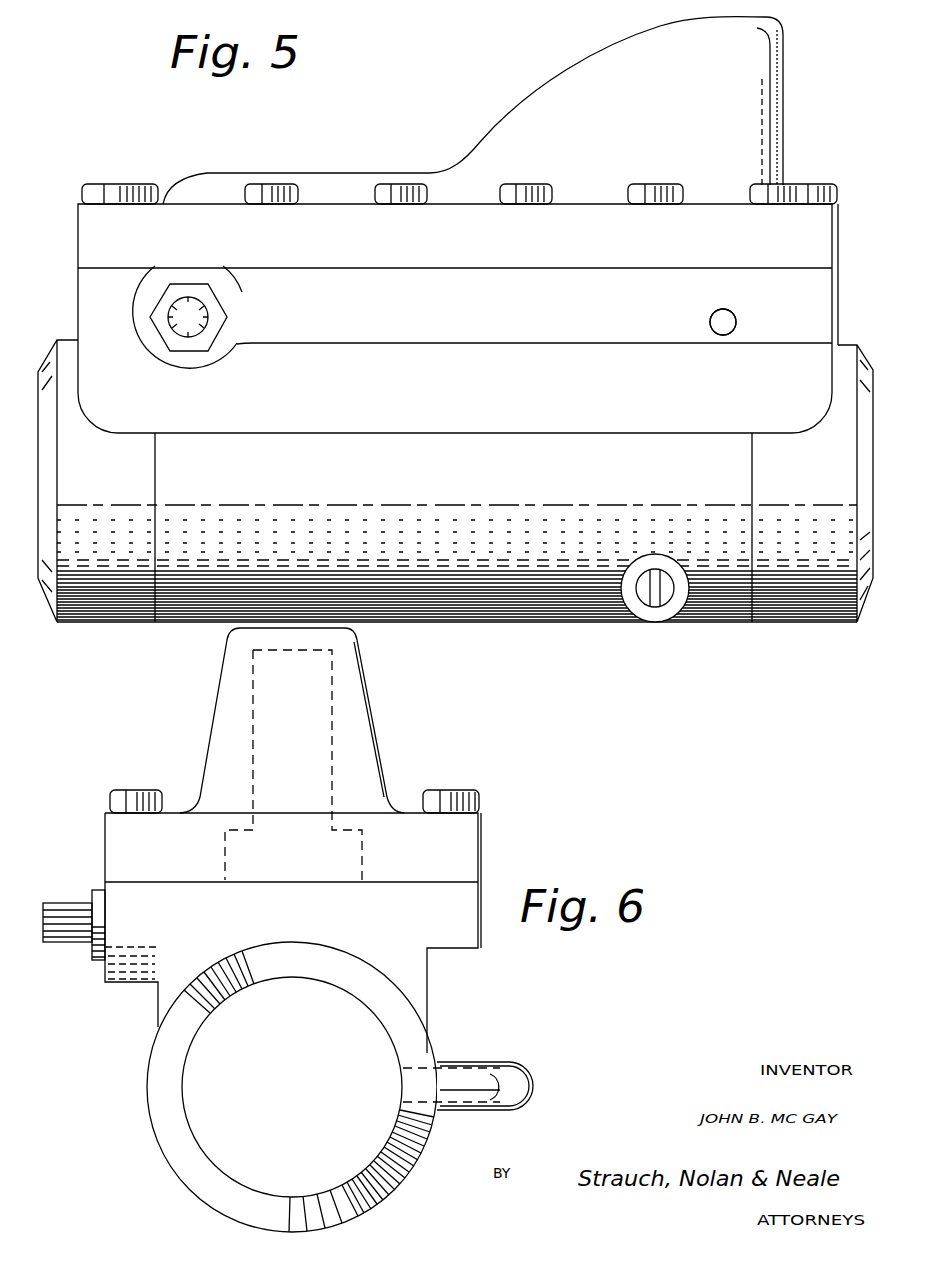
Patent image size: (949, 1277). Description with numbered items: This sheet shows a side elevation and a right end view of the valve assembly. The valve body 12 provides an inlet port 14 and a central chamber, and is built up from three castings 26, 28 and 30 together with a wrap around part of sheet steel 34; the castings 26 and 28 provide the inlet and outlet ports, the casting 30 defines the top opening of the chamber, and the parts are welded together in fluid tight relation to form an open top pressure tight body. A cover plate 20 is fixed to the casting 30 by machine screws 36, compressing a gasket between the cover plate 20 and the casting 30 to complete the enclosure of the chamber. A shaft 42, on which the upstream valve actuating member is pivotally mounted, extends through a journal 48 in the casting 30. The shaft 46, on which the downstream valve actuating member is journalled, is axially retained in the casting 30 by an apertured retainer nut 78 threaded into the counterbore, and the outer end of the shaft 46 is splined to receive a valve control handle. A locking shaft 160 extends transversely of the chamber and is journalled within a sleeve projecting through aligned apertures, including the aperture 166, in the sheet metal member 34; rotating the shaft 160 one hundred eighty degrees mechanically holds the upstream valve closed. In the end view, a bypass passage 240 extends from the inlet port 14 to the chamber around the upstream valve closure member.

In FIG. 5, the valve body 12 is at (448, 497).
In FIG. 6, the inlet port 14 is at (312, 978).
In FIG. 5, the cover plate 20 is at (560, 74).
In FIG. 6, the cover plate 20 is at (370, 726).
In FIG. 5, the casting 26 is at (804, 511).
In FIG. 6, the casting 26 is at (148, 1088).
In FIG. 5, the casting 28 is at (101, 497).
In FIG. 5, the casting 30 is at (472, 433).
In FIG. 6, the casting 30 is at (478, 948).
In FIG. 5, the wrap around part of sheet steel 34 is at (490, 624).
In FIG. 5, the machine screws 36 is at (245, 194).
In FIG. 6, the machine screws 36 is at (136, 790).
In FIG. 5, the shaft 42 is at (710, 322).
In FIG. 5, the shaft 46 is at (197, 317).
In FIG. 6, the shaft 46 is at (70, 903).
In FIG. 5, the journal 48 is at (736, 322).
In FIG. 5, the retainer nut 78 is at (222, 320).
In FIG. 6, the retainer nut 78 is at (97, 960).
In FIG. 5, the shaft 160 is at (660, 606).
In FIG. 5, the aperture 166 is at (646, 616).
In FIG. 6, the bypass passage 240 is at (486, 1062).